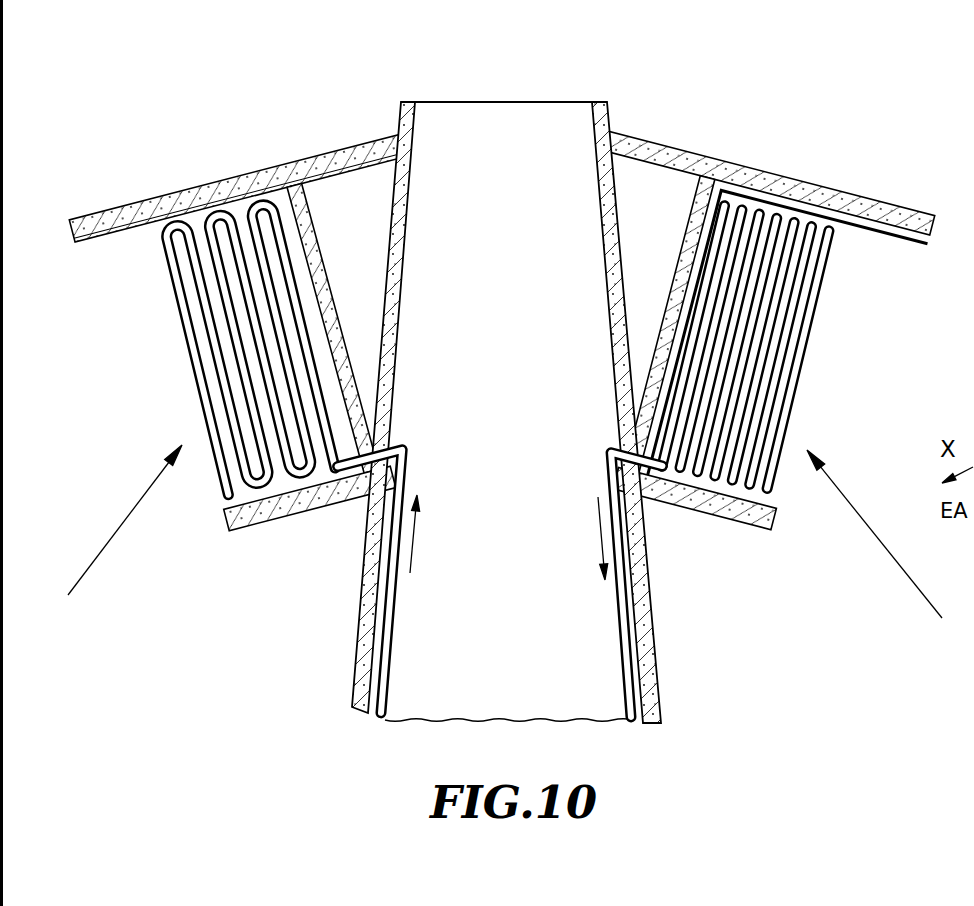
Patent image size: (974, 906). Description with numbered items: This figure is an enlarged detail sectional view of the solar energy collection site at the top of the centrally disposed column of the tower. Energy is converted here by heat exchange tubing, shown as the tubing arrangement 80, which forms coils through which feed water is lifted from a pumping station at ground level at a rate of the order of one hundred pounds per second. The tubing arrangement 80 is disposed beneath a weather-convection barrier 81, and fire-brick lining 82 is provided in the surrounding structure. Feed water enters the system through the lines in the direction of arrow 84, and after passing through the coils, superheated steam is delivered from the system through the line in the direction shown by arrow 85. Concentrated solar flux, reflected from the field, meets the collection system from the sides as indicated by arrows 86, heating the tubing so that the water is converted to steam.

The tubing arrangement 80 is at (815, 325).
The weather-convection barrier 81 is at (797, 180).
The fire-brick lining 82 is at (900, 236).
The arrow indicating feed water entry 84 is at (397, 619).
The arrow indicating superheated steam delivery 85 is at (620, 623).
The arrow indicating concentrated flux 86 is at (105, 545).